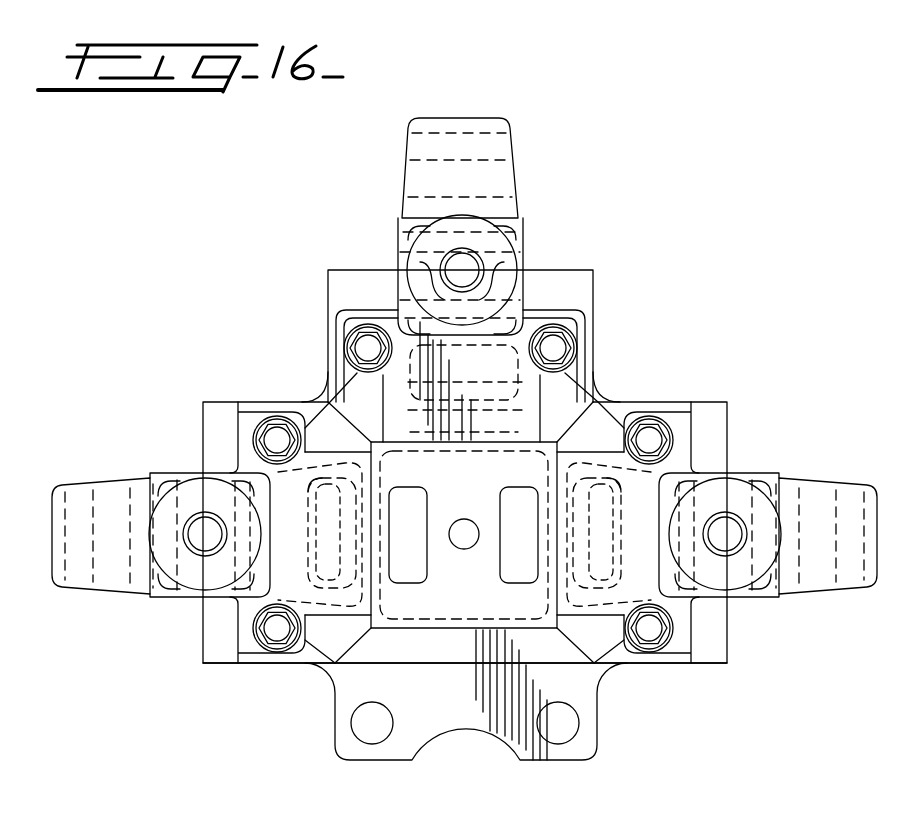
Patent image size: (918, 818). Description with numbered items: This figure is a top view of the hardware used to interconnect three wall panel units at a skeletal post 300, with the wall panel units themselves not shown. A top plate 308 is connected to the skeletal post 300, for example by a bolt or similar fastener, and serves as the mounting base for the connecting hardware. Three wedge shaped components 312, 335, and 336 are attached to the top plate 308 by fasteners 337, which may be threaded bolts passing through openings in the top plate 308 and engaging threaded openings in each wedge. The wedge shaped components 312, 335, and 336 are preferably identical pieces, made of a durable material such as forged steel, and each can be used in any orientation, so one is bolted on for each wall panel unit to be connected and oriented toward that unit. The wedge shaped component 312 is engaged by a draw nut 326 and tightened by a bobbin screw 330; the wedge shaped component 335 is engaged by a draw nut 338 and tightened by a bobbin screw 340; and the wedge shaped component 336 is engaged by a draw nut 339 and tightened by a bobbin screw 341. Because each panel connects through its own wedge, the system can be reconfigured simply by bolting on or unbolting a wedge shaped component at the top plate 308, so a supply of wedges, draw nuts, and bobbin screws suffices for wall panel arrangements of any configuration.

The skeletal post 300 is at (596, 377).
The top plate 308 is at (328, 705).
The wedge shaped component 312 is at (703, 402).
The draw nut 326 is at (797, 478).
The bobbin screw 330 is at (728, 512).
The wedge shaped component 335 is at (218, 666).
The wedge shaped component 336 is at (594, 280).
The fasteners 337 is at (277, 416).
The draw nut 338 is at (133, 478).
The draw nut 339 is at (405, 177).
The bobbin screw 340 is at (196, 548).
The bobbin screw 341 is at (480, 262).